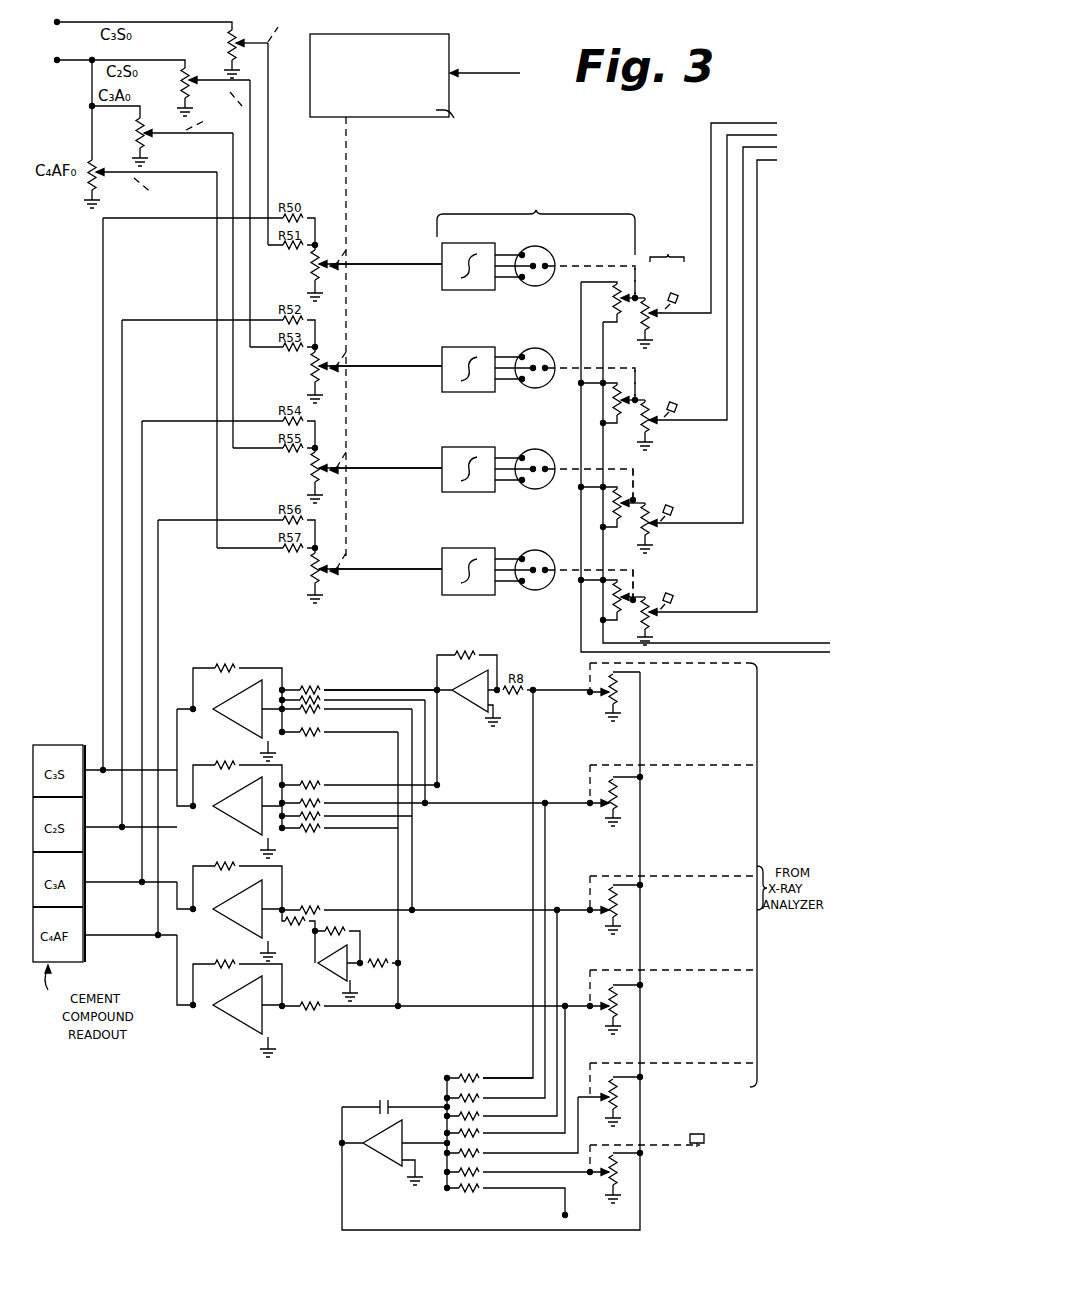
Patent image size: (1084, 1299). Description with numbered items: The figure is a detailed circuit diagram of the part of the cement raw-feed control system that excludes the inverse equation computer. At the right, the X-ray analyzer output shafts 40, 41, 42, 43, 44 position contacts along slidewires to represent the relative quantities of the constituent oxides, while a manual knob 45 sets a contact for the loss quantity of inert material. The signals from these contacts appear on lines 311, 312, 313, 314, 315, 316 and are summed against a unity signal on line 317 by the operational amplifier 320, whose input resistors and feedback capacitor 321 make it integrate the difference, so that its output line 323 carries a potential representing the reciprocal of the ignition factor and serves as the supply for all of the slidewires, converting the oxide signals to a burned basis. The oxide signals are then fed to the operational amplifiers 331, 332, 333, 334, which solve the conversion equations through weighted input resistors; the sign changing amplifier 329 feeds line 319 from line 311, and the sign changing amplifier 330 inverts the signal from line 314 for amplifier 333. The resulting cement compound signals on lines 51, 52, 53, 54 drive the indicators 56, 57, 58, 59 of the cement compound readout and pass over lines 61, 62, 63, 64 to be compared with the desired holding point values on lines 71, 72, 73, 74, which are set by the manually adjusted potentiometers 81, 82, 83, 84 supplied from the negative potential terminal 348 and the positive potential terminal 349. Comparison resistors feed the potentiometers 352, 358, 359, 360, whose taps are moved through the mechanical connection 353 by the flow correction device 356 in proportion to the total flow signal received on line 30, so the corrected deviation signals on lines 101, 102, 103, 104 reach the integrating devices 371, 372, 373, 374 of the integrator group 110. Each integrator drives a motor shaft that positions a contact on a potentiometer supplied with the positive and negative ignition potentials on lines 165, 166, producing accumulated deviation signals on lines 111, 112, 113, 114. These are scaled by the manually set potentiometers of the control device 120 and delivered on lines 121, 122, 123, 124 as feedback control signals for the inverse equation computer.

The line 30 is at (495, 72).
The output shaft 40 is at (690, 665).
The output shaft 41 is at (676, 766).
The output shaft 42 is at (676, 876).
The output shaft 43 is at (673, 974).
The output shaft 44 is at (687, 1064).
The manual knob 45 is at (663, 1153).
The line 51 is at (177, 727).
The line 52 is at (177, 801).
The line 53 is at (176, 878).
The line 54 is at (177, 953).
The indicator 56 is at (85, 790).
The indicator 57 is at (85, 840).
The indicator 58 is at (85, 900).
The indicator 59 is at (85, 948).
The line 61 is at (103, 546).
The line 62 is at (122, 602).
The line 63 is at (142, 583).
The line 64 is at (158, 613).
The line 71 is at (268, 140).
The line 72 is at (250, 285).
The line 73 is at (233, 370).
The line 74 is at (217, 480).
The manually adjusted potentiometer 81 is at (235, 54).
The manually adjusted potentiometer 82 is at (204, 92).
The manually adjusted potentiometer 83 is at (162, 113).
The manually adjusted potentiometer 84 is at (150, 178).
The line 101 is at (400, 264).
The line 102 is at (397, 366).
The line 103 is at (392, 468).
The line 104 is at (387, 569).
The integrator group 110 is at (536, 218).
The line 111 is at (637, 296).
The line 112 is at (646, 410).
The line 113 is at (647, 511).
The line 114 is at (645, 607).
The control device 120 is at (667, 244).
The line 121 is at (711, 150).
The line 122 is at (727, 178).
The line 123 is at (743, 208).
The line 124 is at (757, 246).
The line 165 is at (778, 655).
The line 166 is at (740, 643).
The line 311 is at (576, 692).
The line 312 is at (558, 802).
The line 313 is at (568, 907).
The line 314 is at (570, 1004).
The line 315 is at (578, 1092).
The line 316 is at (568, 1172).
The line 317 is at (558, 1198).
The line 319 is at (409, 690).
The operational amplifier 320 is at (454, 1126).
The capacitor 321 is at (376, 1102).
The output line 323 is at (342, 1190).
The sign changing amplifier 329 is at (468, 688).
The sign changing amplifier 330 is at (350, 973).
The operational amplifier 331 is at (314, 712).
The operational amplifier 332 is at (391, 809).
The operational amplifier 333 is at (391, 914).
The operational amplifier 334 is at (391, 1008).
The terminal 348 is at (72, 28).
The terminal 349 is at (72, 68).
The variable potentiometer 352 is at (310, 265).
The mechanical connection 353 is at (354, 170).
The flow correction device 356 is at (463, 120).
The potentiometer 358 is at (310, 369).
The potentiometer 359 is at (310, 470).
The potentiometer 360 is at (310, 571).
The integrating device 371 is at (535, 267).
The integrating device 372 is at (535, 371).
The integrating device 373 is at (534, 471).
The integrating device 374 is at (532, 572).